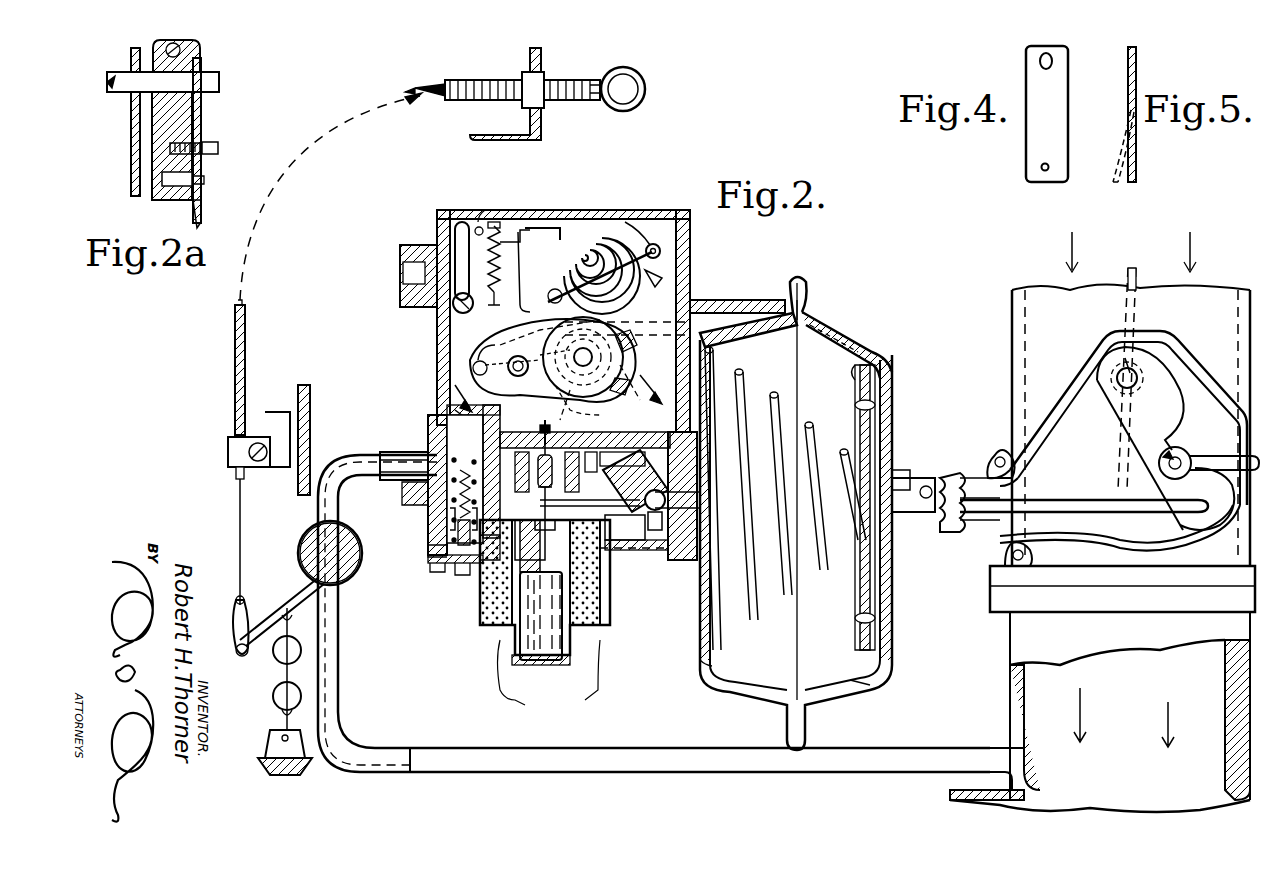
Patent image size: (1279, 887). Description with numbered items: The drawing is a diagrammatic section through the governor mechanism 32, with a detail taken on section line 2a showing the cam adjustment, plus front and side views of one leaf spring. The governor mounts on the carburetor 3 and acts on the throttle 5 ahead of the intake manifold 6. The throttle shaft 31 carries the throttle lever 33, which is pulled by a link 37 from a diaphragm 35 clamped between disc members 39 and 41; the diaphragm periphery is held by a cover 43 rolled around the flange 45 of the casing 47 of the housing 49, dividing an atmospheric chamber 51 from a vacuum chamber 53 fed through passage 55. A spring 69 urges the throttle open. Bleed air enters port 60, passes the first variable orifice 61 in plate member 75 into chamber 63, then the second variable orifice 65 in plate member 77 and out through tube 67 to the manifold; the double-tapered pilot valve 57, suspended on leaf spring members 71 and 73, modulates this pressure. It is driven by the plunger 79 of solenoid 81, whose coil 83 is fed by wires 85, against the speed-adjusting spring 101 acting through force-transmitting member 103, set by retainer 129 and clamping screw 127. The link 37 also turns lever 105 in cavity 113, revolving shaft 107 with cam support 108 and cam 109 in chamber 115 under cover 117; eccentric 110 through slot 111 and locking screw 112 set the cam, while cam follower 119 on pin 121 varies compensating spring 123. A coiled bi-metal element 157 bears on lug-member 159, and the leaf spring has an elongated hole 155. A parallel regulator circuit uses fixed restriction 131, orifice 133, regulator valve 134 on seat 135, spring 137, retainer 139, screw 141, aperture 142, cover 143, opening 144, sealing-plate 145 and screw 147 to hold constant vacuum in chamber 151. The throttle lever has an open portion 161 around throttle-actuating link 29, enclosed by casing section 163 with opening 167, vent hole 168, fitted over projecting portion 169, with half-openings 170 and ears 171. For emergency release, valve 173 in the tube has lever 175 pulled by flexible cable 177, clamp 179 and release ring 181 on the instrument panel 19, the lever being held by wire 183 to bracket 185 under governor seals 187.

In FIG. 2, the carburetor 3 is at (1012, 310).
In FIG. 2, the throttle 5 is at (1140, 272).
In FIG. 2, the intake manifold 6 is at (1010, 648).
In FIG. 2, the instrument panel 19 is at (541, 128).
In FIG. 2, the throttle-actuating link 29 is at (1240, 442).
In FIG. 2, the throttle shaft 31 is at (1135, 368).
In FIG. 2, the governor mechanism 32 is at (867, 300).
In FIG. 2, the throttle lever 33 is at (1140, 378).
In FIG. 2, the diaphragm 35 is at (850, 340).
In FIG. 2, the link 37 is at (960, 535).
In FIG. 2, the disc member 39 is at (870, 355).
In FIG. 2, the disc member 41 is at (880, 405).
In FIG. 2, the cover 43 is at (835, 318).
In FIG. 2, the flange 45 is at (790, 300).
In FIG. 2, the casing 47 is at (740, 700).
In FIG. 2, the housing 49 is at (690, 245).
In FIG. 2, the chamber 51 is at (870, 690).
In FIG. 2, the chamber 53 is at (700, 690).
In FIG. 2, the passage 55 is at (640, 440).
In FIG. 2, the pilot valve 57 is at (515, 445).
In FIG. 2, the port 60 is at (400, 270).
In FIG. 2, the variable orifice 61 is at (557, 426).
In FIG. 2, the chamber 63 is at (553, 487).
In FIG. 2, the variable orifice 65 is at (560, 510).
In FIG. 2, the tube 67 is at (370, 748).
In FIG. 2, the spring 69 is at (740, 374).
In FIG. 2, the leaf spring member 71 is at (620, 452).
In FIG. 2, the leaf spring member 73 is at (622, 522).
In FIG. 2, the plate member 75 is at (605, 447).
In FIG. 2, the plate member 77 is at (520, 530).
In FIG. 2, the plunger 79 is at (540, 665).
In FIG. 2, the solenoid 81 is at (482, 635).
In FIG. 2, the coil 83 is at (600, 600).
In FIG. 2, the wires 85 is at (549, 681).
In FIG. 2, the speed-adjusting spring 101 is at (483, 218).
In FIG. 2, the force-transmitting member 103 is at (548, 290).
In FIG. 2, the lever 105 is at (625, 385).
In FIG. 2a, the shaft 107 is at (219, 82).
In FIG. 2, the shaft 107 is at (572, 395).
In FIG. 2a, the cam support 108 is at (200, 42).
In FIG. 2, the cam support 108 is at (585, 409).
In FIG. 2a, the cam 109 is at (199, 228).
In FIG. 2, the cam 109 is at (478, 355).
In FIG. 2a, the eccentric 110 is at (204, 180).
In FIG. 2, the eccentric 110 is at (473, 368).
In FIG. 2, the slot 111 is at (508, 366).
In FIG. 2a, the screw 112 is at (218, 146).
In FIG. 2, the screw 112 is at (485, 365).
In FIG. 2, the cavity 113 is at (660, 283).
In FIG. 2, the chamber 115 is at (600, 225).
In FIG. 2, the cover 117 is at (485, 210).
In FIG. 2, the cam follower 119 is at (600, 267).
In FIG. 2, the pin 121 is at (664, 236).
In FIG. 2, the compensating spring 123 is at (590, 320).
In FIG. 2, the clamping screw 127 is at (463, 313).
In FIG. 2, the main spring retainer 129 is at (455, 235).
In FIG. 2, the fixed restriction 131 is at (428, 440).
In FIG. 2, the orifice 133 is at (455, 412).
In FIG. 2, the regulator valve 134 is at (454, 435).
In FIG. 2, the seat 135 is at (450, 420).
In FIG. 2, the spring 137 is at (402, 495).
In FIG. 2, the retainer 139 is at (450, 512).
In FIG. 2, the screw 141 is at (450, 530).
In FIG. 2, the aperture 142 is at (484, 560).
In FIG. 2, the cover 143 is at (482, 612).
In FIG. 2, the opening 144 is at (437, 572).
In FIG. 2, the sealing-plate 145 is at (462, 575).
In FIG. 2, the screw 147 is at (428, 552).
In FIG. 2, the chamber 151 is at (625, 555).
In FIG. 4, the elongated hole 155 is at (1053, 61).
In FIG. 2, the coiled bi-metal element 157 is at (610, 225).
In FIG. 2, the lug-member 159 is at (496, 222).
In FIG. 2, the open portion 161 is at (1178, 446).
In FIG. 2, the casing section 163 is at (1060, 375).
In FIG. 2, the opening 167 is at (1100, 360).
In FIG. 2, the air vent hole 168 is at (950, 455).
In FIG. 2, the projecting portion 169 is at (905, 488).
In FIG. 2, the half-openings 170 is at (1178, 528).
In FIG. 2, the ears 171 is at (1000, 448).
In FIG. 2, the valve 173 is at (300, 540).
In FIG. 2, the valve lever 175 is at (280, 610).
In FIG. 2, the flexible cable 177 is at (245, 312).
In FIG. 2, the clamp 179 is at (262, 466).
In FIG. 2, the release ring 181 is at (645, 86).
In FIG. 2, the wire 183 is at (287, 688).
In FIG. 2, the bracket 185 is at (270, 735).
In FIG. 2, the governor seals 187 is at (273, 652).
In FIG. 2, the section line 2a is at (572, 372).